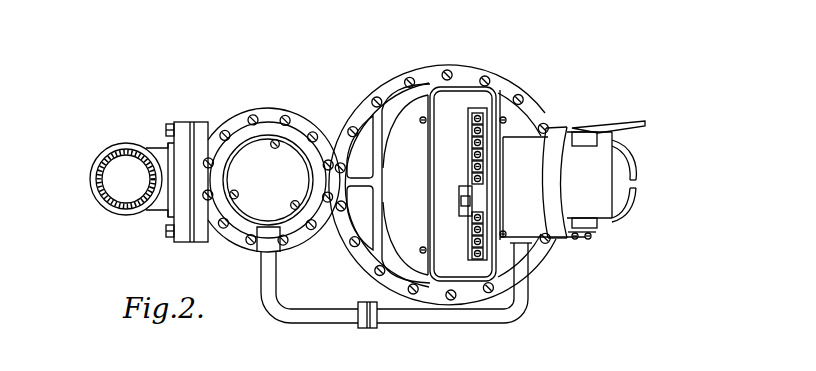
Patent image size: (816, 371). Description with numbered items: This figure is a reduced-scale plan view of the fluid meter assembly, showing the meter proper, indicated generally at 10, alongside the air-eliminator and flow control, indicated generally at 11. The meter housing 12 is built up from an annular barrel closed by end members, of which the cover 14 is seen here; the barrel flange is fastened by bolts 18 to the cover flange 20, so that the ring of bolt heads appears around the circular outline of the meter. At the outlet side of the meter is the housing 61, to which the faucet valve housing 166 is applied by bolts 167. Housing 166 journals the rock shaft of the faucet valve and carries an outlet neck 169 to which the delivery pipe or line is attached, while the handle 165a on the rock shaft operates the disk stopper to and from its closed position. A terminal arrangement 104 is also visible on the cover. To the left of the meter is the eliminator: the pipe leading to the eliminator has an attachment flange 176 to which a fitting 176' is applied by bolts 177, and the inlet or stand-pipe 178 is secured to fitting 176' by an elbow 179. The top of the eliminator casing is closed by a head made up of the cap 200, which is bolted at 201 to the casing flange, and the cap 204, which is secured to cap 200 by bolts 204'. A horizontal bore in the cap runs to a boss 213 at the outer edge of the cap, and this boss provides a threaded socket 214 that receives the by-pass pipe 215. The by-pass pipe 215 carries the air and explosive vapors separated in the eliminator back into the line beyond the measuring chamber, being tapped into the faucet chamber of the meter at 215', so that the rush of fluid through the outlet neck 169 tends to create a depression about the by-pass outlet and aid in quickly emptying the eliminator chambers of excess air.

The meter 10 is at (509, 74).
The air-eliminator and flow control 11 is at (277, 108).
The meter housing 12 is at (422, 81).
The cover 14 is at (392, 108).
The bolts 18 is at (485, 76).
The cover flange 20 is at (528, 106).
The housing 61 is at (527, 157).
The terminal strip 104 is at (488, 117).
The handle 165a is at (631, 128).
The housing 166 is at (598, 168).
The bolts 167 is at (575, 247).
The outlet neck 169 is at (620, 198).
The attachment flange 176 is at (201, 161).
The fitting 176' is at (214, 154).
The bolts 177 is at (172, 124).
The inlet or stand-pipe 178 is at (113, 216).
The elbow 179 is at (131, 220).
The cap 200 is at (242, 232).
The bolts 201 is at (292, 248).
The cap 204 is at (279, 160).
The bolts 204' is at (287, 144).
The boss 213 is at (268, 238).
The threaded socket 214 is at (266, 238).
The by-pass pipe 215 is at (382, 311).
The tap of by-pass pipe 215' is at (547, 283).